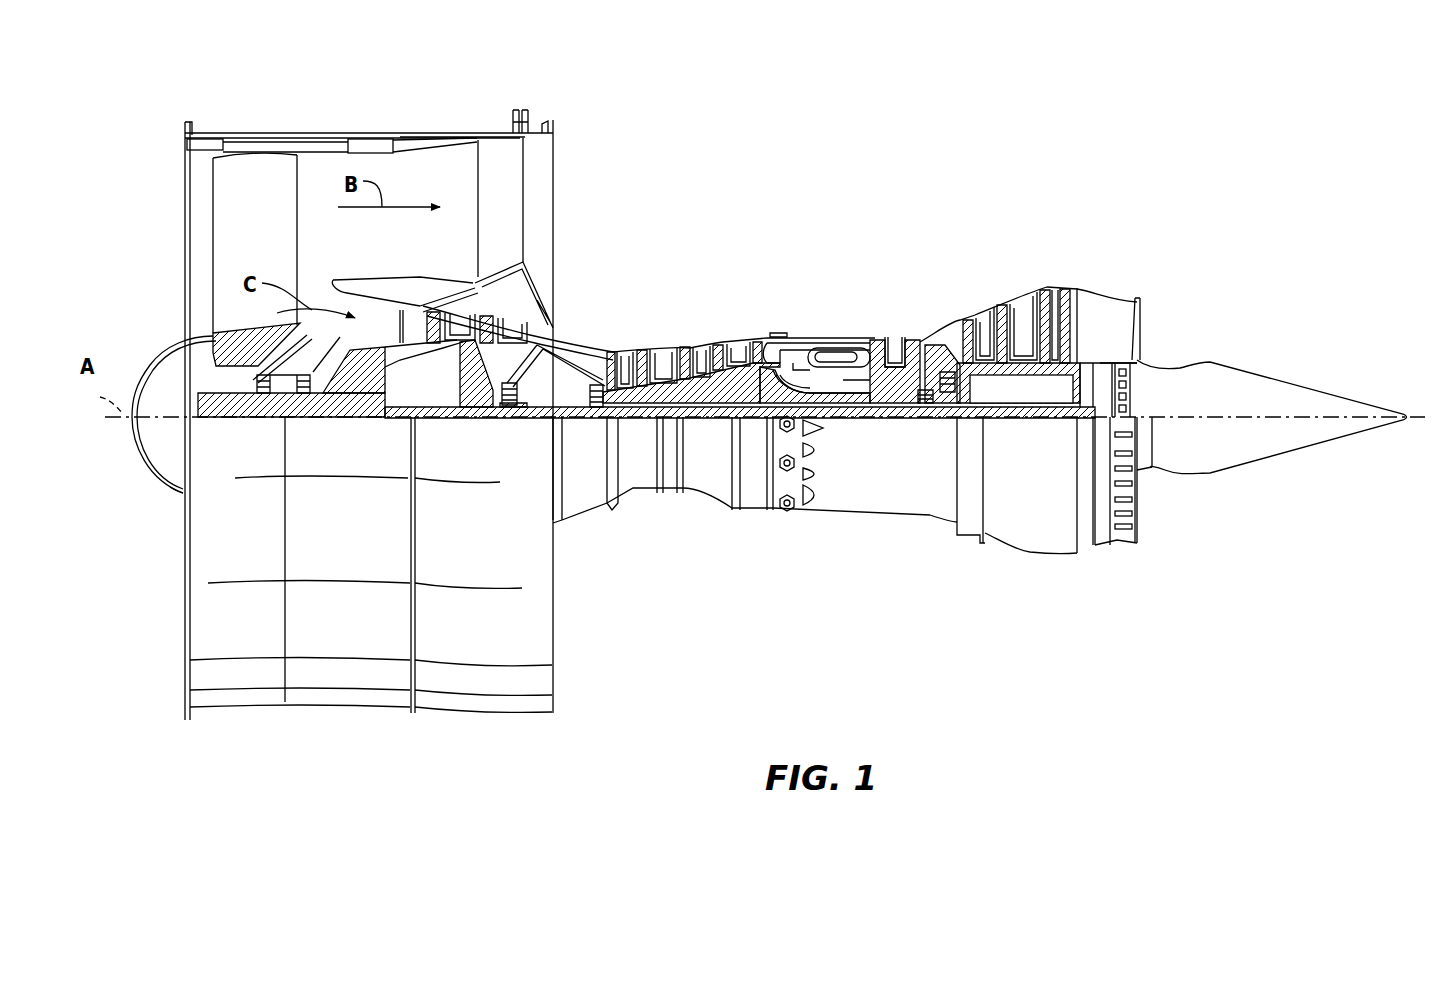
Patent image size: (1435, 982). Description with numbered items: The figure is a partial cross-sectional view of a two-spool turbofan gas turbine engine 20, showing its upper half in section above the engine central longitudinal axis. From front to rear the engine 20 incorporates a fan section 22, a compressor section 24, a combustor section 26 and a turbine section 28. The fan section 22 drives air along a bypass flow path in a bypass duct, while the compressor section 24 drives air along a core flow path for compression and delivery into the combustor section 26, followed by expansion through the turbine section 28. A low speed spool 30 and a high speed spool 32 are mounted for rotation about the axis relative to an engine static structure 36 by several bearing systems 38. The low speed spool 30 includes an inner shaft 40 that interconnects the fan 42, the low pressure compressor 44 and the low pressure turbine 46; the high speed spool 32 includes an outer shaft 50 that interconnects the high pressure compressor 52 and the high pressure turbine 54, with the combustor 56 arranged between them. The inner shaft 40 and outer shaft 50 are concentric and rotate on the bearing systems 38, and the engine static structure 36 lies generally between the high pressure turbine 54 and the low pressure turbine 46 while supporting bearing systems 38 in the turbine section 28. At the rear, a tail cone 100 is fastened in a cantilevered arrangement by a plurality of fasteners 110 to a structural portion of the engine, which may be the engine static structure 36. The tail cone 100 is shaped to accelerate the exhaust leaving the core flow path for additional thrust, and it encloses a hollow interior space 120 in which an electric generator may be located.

The gas turbine engine 20 is at (1085, 128).
The fan section 22 is at (287, 128).
The compressor section 24 is at (693, 280).
The combustor section 26 is at (815, 310).
The turbine section 28 is at (1028, 291).
The low speed spool 30 is at (720, 422).
The high speed spool 32 is at (755, 377).
The engine static structure 36 is at (754, 512).
The bearing systems 38 is at (263, 386).
The inner shaft 40 is at (575, 420).
The fan 42 is at (266, 244).
The low pressure compressor 44 is at (487, 318).
The low pressure turbine 46 is at (1022, 300).
The outer shaft 50 is at (843, 397).
The high pressure compressor 52 is at (673, 388).
The high pressure turbine 54 is at (893, 335).
The combustor 56 is at (838, 358).
The tail cone 100 is at (1272, 387).
The fasteners 110 is at (1125, 368).
The hollow interior space 120 is at (1205, 380).